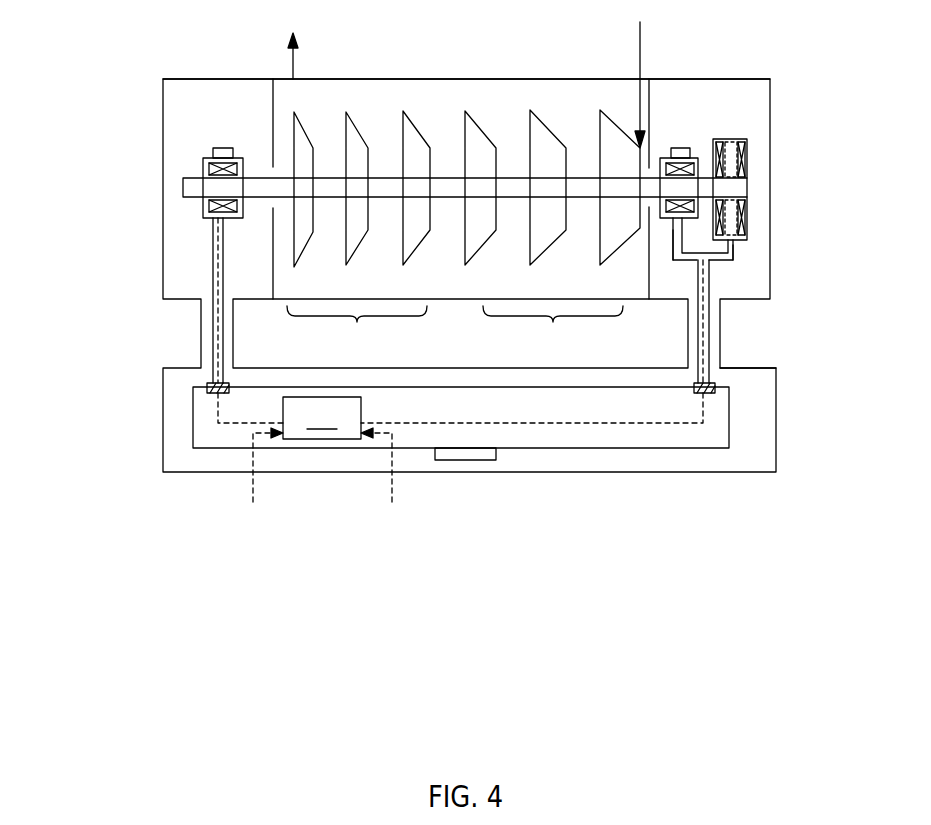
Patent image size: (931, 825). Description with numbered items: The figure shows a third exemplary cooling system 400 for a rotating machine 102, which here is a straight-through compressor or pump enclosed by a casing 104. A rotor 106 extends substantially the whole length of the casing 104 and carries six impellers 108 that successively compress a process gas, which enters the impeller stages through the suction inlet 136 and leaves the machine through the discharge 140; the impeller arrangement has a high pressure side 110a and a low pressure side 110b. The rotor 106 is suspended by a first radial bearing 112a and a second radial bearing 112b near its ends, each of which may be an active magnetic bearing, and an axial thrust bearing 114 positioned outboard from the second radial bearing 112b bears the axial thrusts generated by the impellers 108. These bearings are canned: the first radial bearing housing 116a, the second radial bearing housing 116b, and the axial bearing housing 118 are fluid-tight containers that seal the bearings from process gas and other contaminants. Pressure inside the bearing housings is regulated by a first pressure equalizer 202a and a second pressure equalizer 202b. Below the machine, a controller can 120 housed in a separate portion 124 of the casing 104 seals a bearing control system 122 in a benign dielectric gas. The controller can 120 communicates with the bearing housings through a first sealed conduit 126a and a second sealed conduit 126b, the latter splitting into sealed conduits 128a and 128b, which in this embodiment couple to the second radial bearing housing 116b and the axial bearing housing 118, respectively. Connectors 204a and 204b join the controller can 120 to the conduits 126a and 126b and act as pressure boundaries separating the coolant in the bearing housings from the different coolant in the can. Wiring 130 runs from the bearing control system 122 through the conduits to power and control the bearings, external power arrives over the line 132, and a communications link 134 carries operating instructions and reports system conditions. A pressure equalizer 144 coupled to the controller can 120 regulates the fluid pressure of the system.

The cooling system 400 is at (106, 57).
The rotating machine 102 is at (510, 98).
The casing 104 is at (322, 79).
The rotor 106 is at (445, 177).
The impellers 108 is at (425, 245).
The high pressure side 110a is at (357, 327).
The low pressure side 110b is at (553, 328).
The first radial bearing 112a is at (253, 142).
The second radial bearing 112b is at (659, 160).
The axial thrust bearing 114 is at (735, 140).
The first radial bearing housing 116a is at (203, 168).
The second radial bearing housing 116b is at (663, 216).
The axial bearing housing 118 is at (737, 243).
The controller can 120 is at (623, 448).
The bearing control system 122 is at (322, 418).
The separate portion 124 is at (752, 368).
The first sealed conduit 126a is at (212, 262).
The second sealed conduit 126b is at (717, 380).
The sealed conduit 128a is at (737, 270).
The sealed conduit 128b is at (686, 276).
The wiring 130 is at (537, 422).
The line 132 is at (251, 462).
The communications link 134 is at (392, 462).
The suction inlet 136 is at (643, 52).
The discharge 140 is at (290, 57).
The pressure equalizer 144 is at (467, 460).
The first pressure equalizer 202a is at (220, 147).
The second pressure equalizer 202b is at (679, 148).
The connector 204a is at (222, 393).
The connector 204b is at (692, 391).